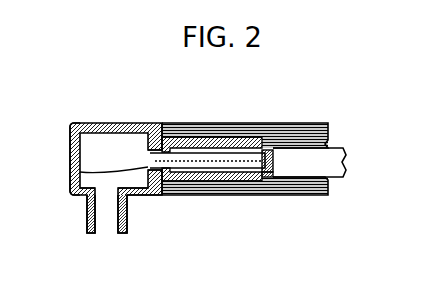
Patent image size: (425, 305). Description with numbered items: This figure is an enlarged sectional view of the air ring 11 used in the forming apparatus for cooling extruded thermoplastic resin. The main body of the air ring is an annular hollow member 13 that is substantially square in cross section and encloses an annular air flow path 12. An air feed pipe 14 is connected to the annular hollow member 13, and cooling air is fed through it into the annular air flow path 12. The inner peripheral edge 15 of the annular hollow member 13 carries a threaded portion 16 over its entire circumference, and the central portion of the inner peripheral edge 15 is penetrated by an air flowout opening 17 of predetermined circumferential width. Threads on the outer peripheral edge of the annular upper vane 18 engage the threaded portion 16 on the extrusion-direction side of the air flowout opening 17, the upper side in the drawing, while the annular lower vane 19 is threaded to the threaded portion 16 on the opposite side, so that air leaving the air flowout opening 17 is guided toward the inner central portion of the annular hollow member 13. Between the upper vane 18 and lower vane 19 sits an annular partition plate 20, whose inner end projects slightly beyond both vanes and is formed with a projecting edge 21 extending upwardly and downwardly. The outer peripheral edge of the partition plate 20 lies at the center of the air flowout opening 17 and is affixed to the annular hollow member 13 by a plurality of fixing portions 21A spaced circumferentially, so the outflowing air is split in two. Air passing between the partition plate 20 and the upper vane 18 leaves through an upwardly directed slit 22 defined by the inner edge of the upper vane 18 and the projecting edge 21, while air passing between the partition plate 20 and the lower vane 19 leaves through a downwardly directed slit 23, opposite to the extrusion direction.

The air ring 11 is at (107, 123).
The annular air flow path 12 is at (83, 147).
The annular hollow member 13 is at (80, 124).
The air feed pipe 14 is at (103, 225).
The inner peripheral edge 15 is at (165, 197).
The threaded portion 16 is at (191, 125).
The air flowout opening 17 is at (141, 147).
The annular upper vane 18 is at (231, 140).
The annular lower vane 19 is at (247, 177).
The annular partition plate 20 is at (208, 167).
The projecting edge 21 is at (278, 158).
The fixing portions 21A is at (80, 172).
The upwardly directed slit 22 is at (265, 158).
The downwardly directed slit 23 is at (269, 176).